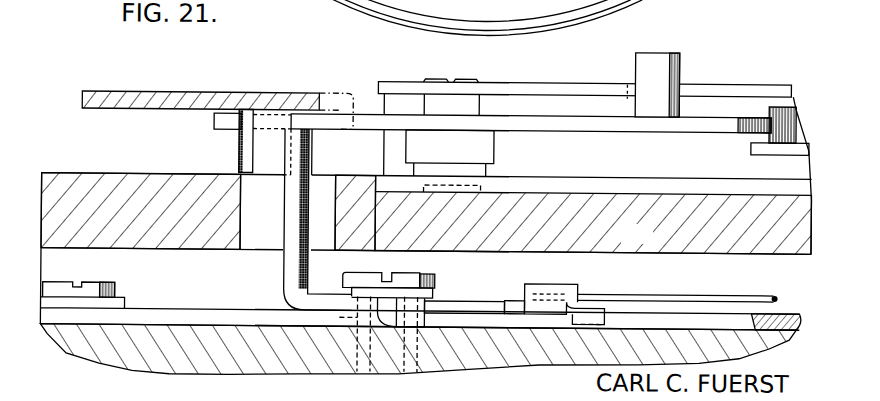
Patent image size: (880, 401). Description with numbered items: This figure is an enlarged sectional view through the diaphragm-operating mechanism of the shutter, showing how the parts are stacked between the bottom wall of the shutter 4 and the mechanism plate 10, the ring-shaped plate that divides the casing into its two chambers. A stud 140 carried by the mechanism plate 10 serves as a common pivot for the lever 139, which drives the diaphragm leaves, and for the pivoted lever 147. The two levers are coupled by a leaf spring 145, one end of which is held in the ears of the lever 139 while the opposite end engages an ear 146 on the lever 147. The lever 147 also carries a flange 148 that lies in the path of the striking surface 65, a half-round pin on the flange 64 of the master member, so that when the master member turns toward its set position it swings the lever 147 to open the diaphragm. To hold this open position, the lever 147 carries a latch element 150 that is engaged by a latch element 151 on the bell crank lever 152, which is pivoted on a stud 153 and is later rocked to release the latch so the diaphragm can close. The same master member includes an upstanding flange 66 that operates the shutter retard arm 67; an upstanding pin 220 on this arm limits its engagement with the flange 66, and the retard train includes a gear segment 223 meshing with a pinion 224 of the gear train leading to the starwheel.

The flange 64 is at (193, 96).
The upstanding flange 66 is at (352, 95).
The shutter retard arm 67 is at (213, 126).
The striking surface 65 is at (248, 153).
The upstanding pin 220 is at (643, 63).
The pinion 224 is at (792, 104).
The gear segment 223 is at (746, 131).
The mechanism plate 10 is at (426, 214).
The stud 153 is at (108, 285).
The bell crank lever 152 is at (173, 311).
The flange 148 is at (284, 280).
The latch element 151 is at (347, 277).
The stud 140 is at (430, 276).
The latch element 150 is at (442, 303).
The pivoted lever 147 is at (512, 298).
The ear 146 is at (556, 285).
The leaf spring 145 is at (644, 295).
The lever 139 is at (797, 297).
The bottom wall of the shutter 4 is at (256, 367).